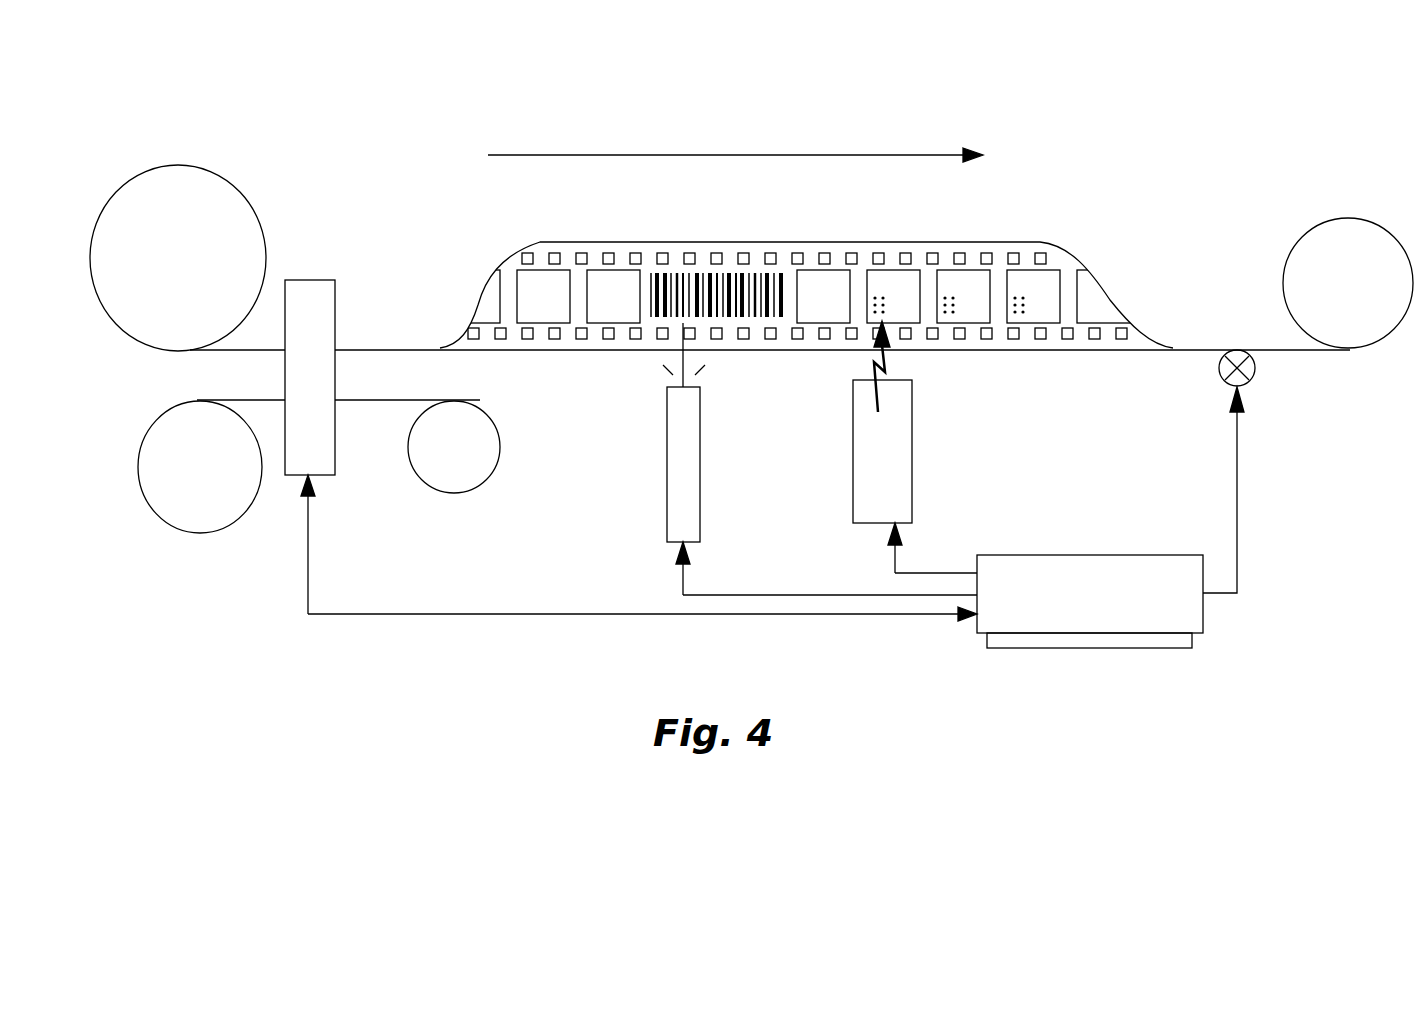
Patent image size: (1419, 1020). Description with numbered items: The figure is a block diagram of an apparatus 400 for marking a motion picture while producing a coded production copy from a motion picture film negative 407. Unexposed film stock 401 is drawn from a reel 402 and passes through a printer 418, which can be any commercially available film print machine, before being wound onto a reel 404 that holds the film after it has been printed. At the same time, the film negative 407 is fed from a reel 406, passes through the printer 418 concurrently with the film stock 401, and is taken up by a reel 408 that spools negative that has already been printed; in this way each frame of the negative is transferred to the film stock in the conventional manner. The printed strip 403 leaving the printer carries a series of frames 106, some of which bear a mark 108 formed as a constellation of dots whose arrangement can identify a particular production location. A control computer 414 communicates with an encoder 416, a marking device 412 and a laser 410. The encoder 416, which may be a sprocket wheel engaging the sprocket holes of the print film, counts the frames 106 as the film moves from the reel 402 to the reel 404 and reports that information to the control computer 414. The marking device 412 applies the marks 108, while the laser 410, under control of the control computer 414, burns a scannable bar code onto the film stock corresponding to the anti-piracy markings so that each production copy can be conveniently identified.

The apparatus 400 is at (563, 678).
The film stock 401 is at (240, 352).
The reel 402 is at (267, 250).
The film strip 403 is at (538, 242).
The reel 404 is at (1290, 255).
The reel 406 is at (150, 508).
The film negative 407 is at (380, 402).
The reel 408 is at (456, 494).
The laser 410 is at (667, 423).
The marking device 412 is at (915, 447).
The control computer 414 is at (1090, 555).
The encoder 416 is at (1218, 368).
The printer 418 is at (631, 450).
The frame 106 is at (593, 270).
The mark 108 is at (868, 305).